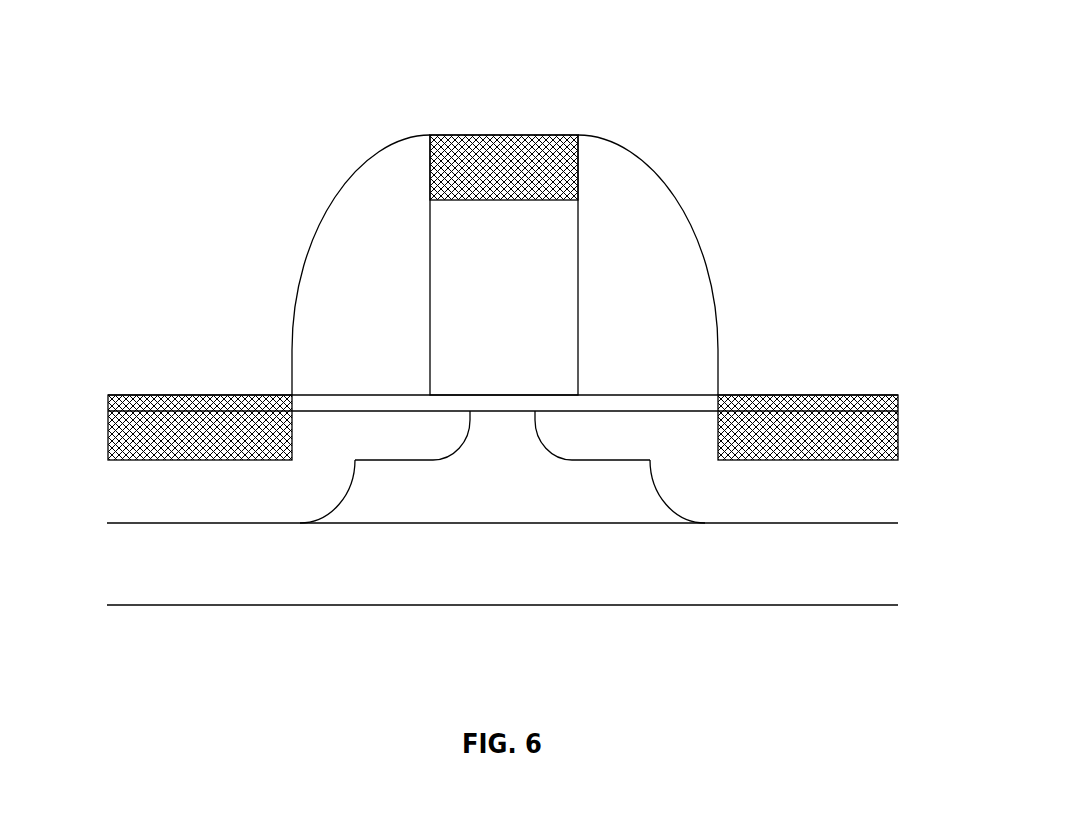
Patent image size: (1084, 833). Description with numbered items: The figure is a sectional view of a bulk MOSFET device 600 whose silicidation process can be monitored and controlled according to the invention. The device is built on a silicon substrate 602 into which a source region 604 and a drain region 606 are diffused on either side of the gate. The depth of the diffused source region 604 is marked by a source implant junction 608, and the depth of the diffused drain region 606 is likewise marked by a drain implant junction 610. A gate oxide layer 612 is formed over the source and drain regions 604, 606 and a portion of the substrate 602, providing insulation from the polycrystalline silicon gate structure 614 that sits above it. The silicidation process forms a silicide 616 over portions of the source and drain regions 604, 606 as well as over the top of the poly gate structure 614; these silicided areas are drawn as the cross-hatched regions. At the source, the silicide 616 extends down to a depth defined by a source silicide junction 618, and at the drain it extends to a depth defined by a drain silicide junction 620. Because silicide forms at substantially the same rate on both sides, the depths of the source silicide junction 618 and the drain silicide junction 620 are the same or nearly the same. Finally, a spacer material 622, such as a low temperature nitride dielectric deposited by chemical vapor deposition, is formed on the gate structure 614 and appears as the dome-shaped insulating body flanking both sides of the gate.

The bulk MOSFET device 600 is at (640, 46).
The silicon substrate 602 is at (522, 565).
The source region 604 is at (167, 500).
The drain region 606 is at (885, 503).
The source implant junction 608 is at (238, 524).
The drain implant junction 610 is at (766, 524).
The gate oxide layer 612 is at (620, 404).
The polycrystalline silicon gate structure 614 is at (520, 358).
The silicide 616 is at (504, 135).
The source silicide junction 618 is at (223, 460).
The drain silicide junction 620 is at (782, 461).
The spacer material 622 is at (389, 308).